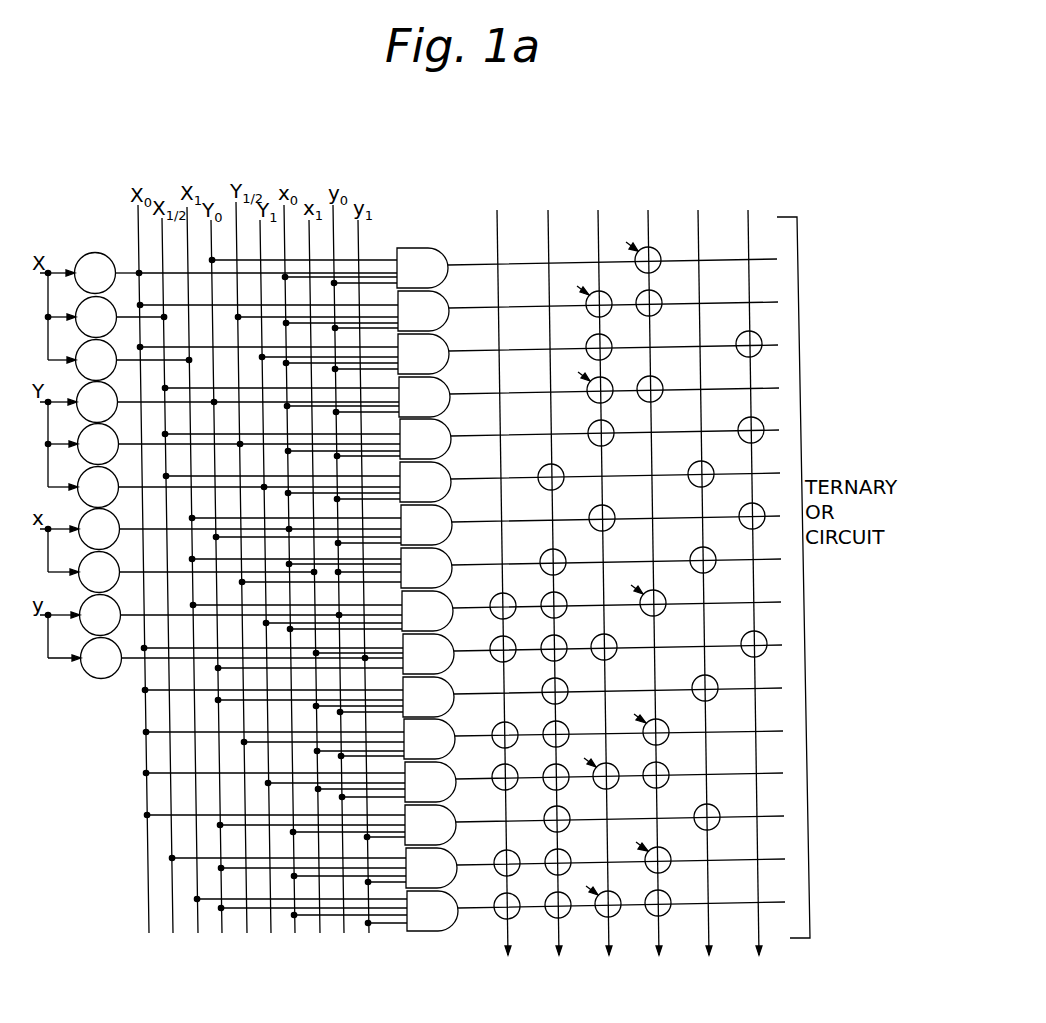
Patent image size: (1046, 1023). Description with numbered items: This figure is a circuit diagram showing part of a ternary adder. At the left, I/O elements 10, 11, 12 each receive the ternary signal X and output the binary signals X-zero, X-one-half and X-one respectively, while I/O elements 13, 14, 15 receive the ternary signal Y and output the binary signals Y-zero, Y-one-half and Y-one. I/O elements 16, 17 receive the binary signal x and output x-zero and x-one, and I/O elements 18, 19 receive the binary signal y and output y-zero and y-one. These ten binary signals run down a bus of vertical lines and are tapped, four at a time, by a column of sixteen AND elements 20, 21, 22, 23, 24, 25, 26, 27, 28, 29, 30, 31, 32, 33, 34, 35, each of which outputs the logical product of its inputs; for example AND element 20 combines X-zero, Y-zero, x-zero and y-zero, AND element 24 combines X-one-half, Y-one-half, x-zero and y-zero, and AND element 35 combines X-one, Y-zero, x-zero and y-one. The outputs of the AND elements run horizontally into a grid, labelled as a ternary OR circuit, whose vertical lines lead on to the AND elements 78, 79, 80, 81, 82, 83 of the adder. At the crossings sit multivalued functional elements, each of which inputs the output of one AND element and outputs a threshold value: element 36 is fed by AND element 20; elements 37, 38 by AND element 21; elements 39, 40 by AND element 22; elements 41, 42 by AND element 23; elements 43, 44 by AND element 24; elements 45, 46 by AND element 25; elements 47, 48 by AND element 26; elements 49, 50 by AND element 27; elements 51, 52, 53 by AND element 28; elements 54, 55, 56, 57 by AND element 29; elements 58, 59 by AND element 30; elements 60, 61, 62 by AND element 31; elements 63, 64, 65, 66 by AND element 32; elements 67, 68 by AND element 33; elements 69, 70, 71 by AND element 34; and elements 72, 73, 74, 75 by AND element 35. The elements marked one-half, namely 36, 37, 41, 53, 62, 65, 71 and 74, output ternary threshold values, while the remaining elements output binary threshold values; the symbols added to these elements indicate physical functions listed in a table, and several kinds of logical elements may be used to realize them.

The I/O element 10 is at (104, 243).
The I/O element 11 is at (81, 302).
The I/O element 12 is at (82, 345).
The I/O element 13 is at (82, 388).
The I/O element 14 is at (83, 430).
The I/O element 15 is at (84, 473).
The I/O element 16 is at (84, 515).
The I/O element 17 is at (85, 557).
The I/O element 18 is at (86, 601).
The I/O element 19 is at (86, 644).
The AND element 20 is at (447, 261).
The AND element 21 is at (448, 304).
The AND element 22 is at (448, 347).
The AND element 23 is at (449, 390).
The AND element 24 is at (450, 432).
The AND element 25 is at (450, 475).
The AND element 26 is at (451, 518).
The AND element 27 is at (451, 561).
The AND element 28 is at (452, 604).
The AND element 29 is at (453, 647).
The AND element 30 is at (453, 690).
The AND element 31 is at (454, 732).
The AND element 32 is at (455, 775).
The AND element 33 is at (455, 818).
The AND element 34 is at (456, 861).
The AND element 35 is at (457, 904).
The multivalued functional element 36 is at (658, 252).
The multivalued functional element 37 is at (600, 291).
The multivalued functional element 38 is at (656, 293).
The multivalued functional element 39 is at (613, 330).
The multivalued functional element 40 is at (755, 333).
The multivalued functional element 41 is at (609, 380).
The multivalued functional element 42 is at (658, 379).
The multivalued functional element 43 is at (610, 424).
The multivalued functional element 44 is at (758, 419).
The multivalued functional element 45 is at (563, 470).
The multivalued functional element 46 is at (716, 462).
The multivalued functional element 47 is at (611, 509).
The multivalued functional element 48 is at (758, 504).
The multivalued functional element 49 is at (563, 554).
The multivalued functional element 50 is at (711, 549).
The multivalued functional element 51 is at (509, 595).
The multivalued functional element 52 is at (560, 594).
The multivalued functional element 53 is at (662, 580).
The multivalued functional element 54 is at (512, 628).
The multivalued functional element 55 is at (561, 637).
The multivalued functional element 56 is at (611, 636).
The multivalued functional element 57 is at (760, 633).
The multivalued functional element 58 is at (568, 681).
The multivalued functional element 59 is at (716, 674).
The multivalued functional element 60 is at (507, 722).
The multivalued functional element 61 is at (561, 722).
The multivalued functional element 62 is at (657, 719).
The multivalued functional element 63 is at (510, 766).
The multivalued functional element 64 is at (548, 787).
The multivalued functional element 65 is at (611, 763).
The multivalued functional element 66 is at (661, 763).
The multivalued functional element 67 is at (566, 810).
The multivalued functional element 68 is at (711, 804).
The multivalued functional element 69 is at (509, 838).
The multivalued functional element 70 is at (565, 851).
The multivalued functional element 71 is at (661, 848).
The multivalued functional element 72 is at (518, 885).
The multivalued functional element 73 is at (567, 915).
The multivalued functional element 74 is at (617, 914).
The multivalued functional element 75 is at (667, 913).
The AND element 78 is at (503, 600).
The AND element 79 is at (554, 600).
The AND element 80 is at (604, 600).
The AND element 81 is at (654, 600).
The AND element 82 is at (704, 600).
The AND element 83 is at (754, 600).